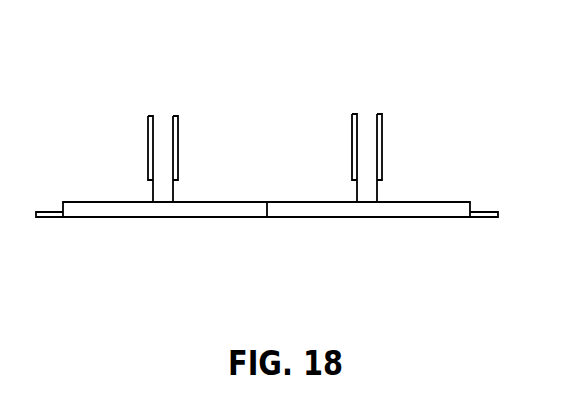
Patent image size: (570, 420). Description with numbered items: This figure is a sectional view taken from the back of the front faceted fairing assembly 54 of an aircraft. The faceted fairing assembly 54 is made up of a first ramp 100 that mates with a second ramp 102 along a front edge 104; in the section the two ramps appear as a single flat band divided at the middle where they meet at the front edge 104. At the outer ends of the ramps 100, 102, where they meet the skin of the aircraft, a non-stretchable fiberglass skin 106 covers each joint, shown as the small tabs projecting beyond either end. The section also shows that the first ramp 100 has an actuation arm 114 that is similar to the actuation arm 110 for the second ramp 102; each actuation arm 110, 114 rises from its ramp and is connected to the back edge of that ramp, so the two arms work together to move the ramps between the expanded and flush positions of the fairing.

The front faceted fairing assembly 54 is at (298, 57).
The first ramp 100 is at (448, 212).
The second ramp 102 is at (195, 213).
The front edge 104 is at (269, 203).
The non-stretchable fiberglass skin 106 is at (48, 216).
The actuation arm 110 is at (174, 143).
The actuation arm 114 is at (378, 146).